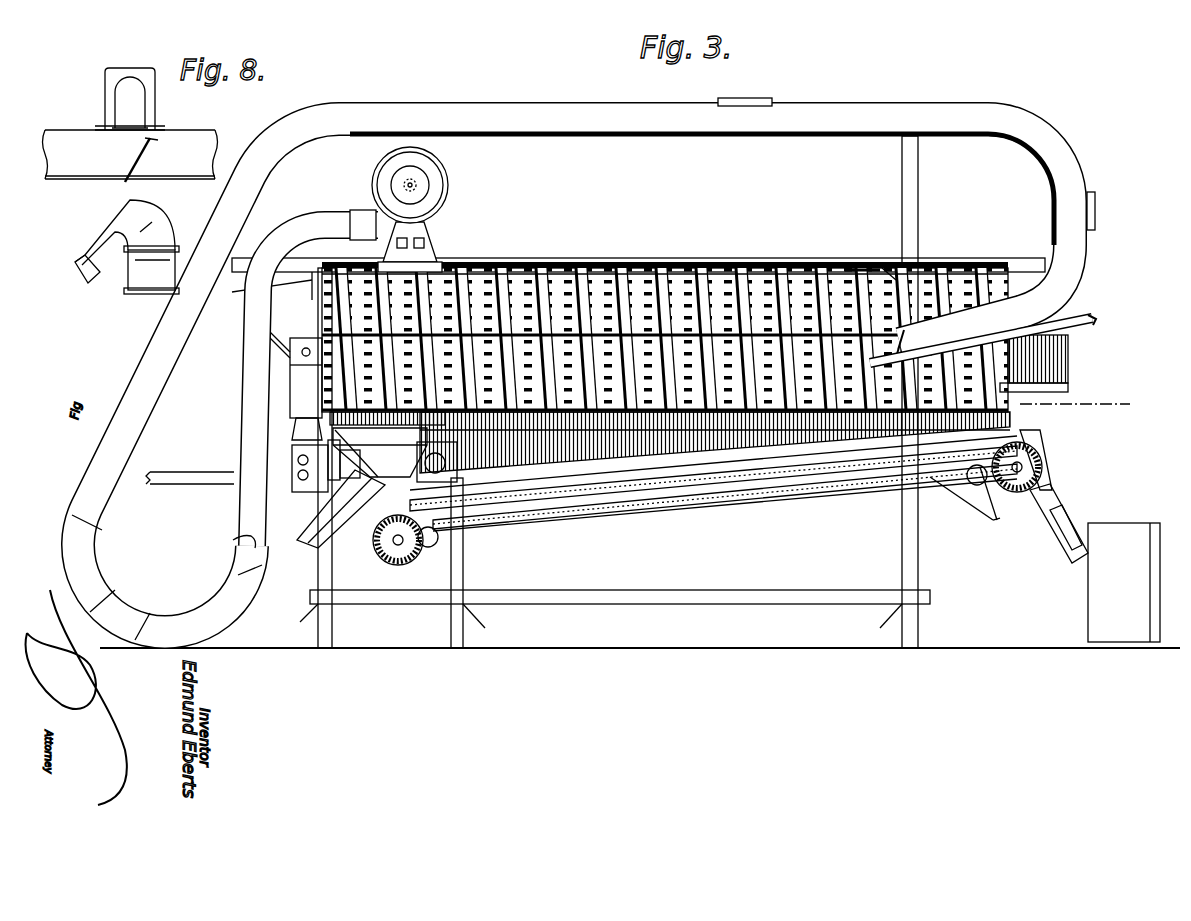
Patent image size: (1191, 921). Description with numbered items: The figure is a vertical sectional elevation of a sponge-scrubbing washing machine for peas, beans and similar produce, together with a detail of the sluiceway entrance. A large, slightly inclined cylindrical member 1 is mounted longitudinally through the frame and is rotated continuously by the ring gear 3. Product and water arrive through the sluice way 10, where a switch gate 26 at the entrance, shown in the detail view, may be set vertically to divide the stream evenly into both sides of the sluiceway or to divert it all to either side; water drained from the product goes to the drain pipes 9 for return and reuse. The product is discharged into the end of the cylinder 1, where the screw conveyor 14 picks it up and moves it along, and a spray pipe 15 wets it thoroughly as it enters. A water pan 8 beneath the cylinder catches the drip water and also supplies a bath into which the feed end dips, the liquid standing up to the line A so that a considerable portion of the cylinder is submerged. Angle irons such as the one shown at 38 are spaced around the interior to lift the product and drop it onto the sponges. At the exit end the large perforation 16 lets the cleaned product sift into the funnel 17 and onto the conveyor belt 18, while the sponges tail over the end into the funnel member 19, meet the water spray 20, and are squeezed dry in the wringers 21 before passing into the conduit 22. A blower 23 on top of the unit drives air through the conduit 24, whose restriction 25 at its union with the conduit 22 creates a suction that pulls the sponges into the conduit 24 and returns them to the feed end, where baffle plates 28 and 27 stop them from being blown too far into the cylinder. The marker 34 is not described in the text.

In FIG. 3, the cylindrical member 1 is at (665, 318).
In FIG. 3, the ring gear 3 is at (892, 267).
In FIG. 3, the water pan 8 is at (540, 460).
In FIG. 3, the drain pipes 9 is at (188, 486).
In FIG. 3, the sluice way 10 is at (290, 306).
In FIG. 8, the sluice way 10 is at (78, 166).
In FIG. 3, the screw conveyor 14 is at (1025, 397).
In FIG. 3, the spray pipe 15 is at (1080, 318).
In FIG. 3, the perforation 16 is at (400, 326).
In FIG. 3, the funnel 17 is at (395, 455).
In FIG. 3, the conveyor belt 18 is at (620, 484).
In FIG. 3, the funnel member 19 is at (300, 405).
In FIG. 3, the water spray 20 is at (289, 337).
In FIG. 3, the wringers 21 is at (296, 452).
In FIG. 3, the conduit 22 is at (284, 522).
In FIG. 3, the blower 23 is at (440, 186).
In FIG. 3, the conduit 24 is at (749, 137).
In FIG. 3, the restriction 25 is at (246, 548).
In FIG. 8, the switch gate 26 is at (150, 155).
In FIG. 3, the baffle plate 27 is at (906, 332).
In FIG. 3, the baffle plate 28 is at (856, 268).
In FIG. 3, the flange 34 is at (746, 104).
In FIG. 3, the angle iron 38 is at (668, 272).
In FIG. 3, the water level line A is at (1082, 405).